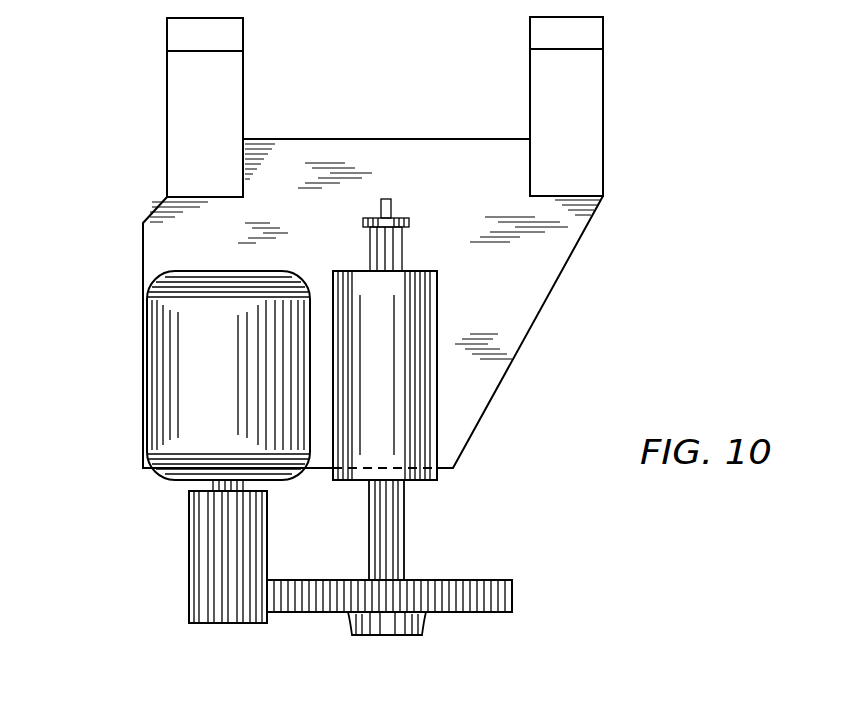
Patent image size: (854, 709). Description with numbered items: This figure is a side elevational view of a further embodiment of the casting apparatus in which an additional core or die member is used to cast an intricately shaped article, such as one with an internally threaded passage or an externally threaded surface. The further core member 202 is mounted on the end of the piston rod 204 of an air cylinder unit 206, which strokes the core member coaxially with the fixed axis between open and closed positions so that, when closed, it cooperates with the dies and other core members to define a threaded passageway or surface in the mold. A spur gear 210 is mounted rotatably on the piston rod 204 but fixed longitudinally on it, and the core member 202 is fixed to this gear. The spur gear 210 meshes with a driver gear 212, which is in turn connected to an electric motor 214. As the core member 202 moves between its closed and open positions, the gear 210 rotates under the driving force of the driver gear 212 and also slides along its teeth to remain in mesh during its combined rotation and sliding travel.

The further core member 202 is at (412, 637).
The piston rod 204 is at (397, 551).
The air cylinder unit 206 is at (416, 508).
The spur gear 210 is at (497, 598).
The driver gear 212 is at (197, 541).
The electric motor 214 is at (158, 360).